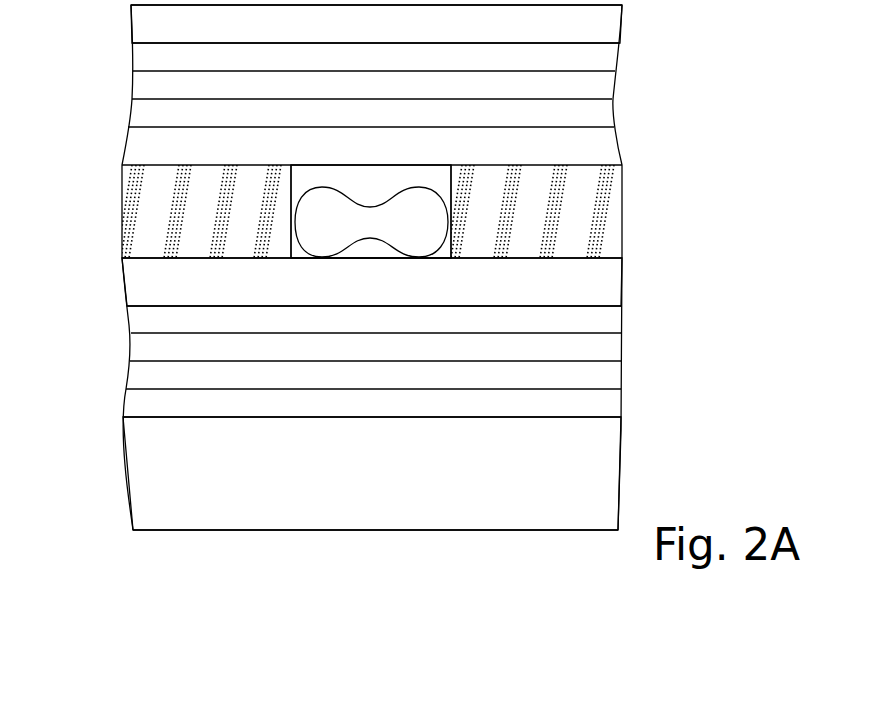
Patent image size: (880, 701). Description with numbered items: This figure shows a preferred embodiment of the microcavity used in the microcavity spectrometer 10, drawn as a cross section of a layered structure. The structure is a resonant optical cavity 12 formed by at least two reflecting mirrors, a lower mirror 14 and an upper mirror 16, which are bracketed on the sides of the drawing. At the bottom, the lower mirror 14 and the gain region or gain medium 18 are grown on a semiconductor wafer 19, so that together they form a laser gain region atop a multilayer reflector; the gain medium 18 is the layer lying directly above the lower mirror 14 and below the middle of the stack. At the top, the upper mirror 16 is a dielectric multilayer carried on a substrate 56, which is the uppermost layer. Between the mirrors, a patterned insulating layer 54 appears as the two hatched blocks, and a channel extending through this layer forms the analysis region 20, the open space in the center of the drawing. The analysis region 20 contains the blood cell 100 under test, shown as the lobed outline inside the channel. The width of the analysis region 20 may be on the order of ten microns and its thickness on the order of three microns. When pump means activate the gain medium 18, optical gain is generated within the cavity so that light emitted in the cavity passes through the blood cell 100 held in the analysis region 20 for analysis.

The microcavity spectrometer 10 is at (272, 549).
The resonant optical cavity 12 is at (686, 46).
The lower mirror 14 is at (99, 165).
The upper mirror 16 is at (104, 42).
The gain medium 18 is at (372, 282).
The semiconductor wafer 19 is at (372, 473).
The analysis region 20 is at (371, 211).
The patterned insulating layer 54 is at (365, 211).
The substrate 56 is at (376, 24).
The blood cell 100 is at (371, 222).